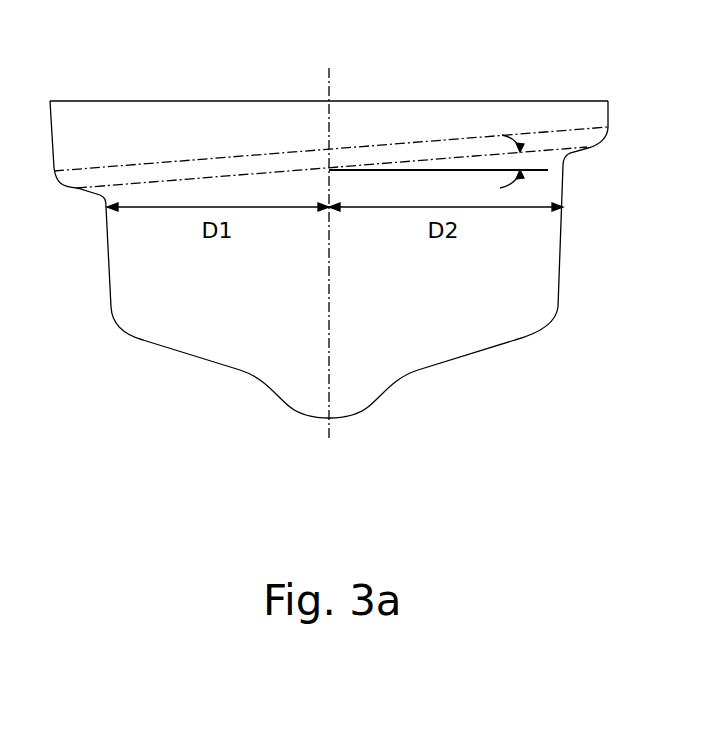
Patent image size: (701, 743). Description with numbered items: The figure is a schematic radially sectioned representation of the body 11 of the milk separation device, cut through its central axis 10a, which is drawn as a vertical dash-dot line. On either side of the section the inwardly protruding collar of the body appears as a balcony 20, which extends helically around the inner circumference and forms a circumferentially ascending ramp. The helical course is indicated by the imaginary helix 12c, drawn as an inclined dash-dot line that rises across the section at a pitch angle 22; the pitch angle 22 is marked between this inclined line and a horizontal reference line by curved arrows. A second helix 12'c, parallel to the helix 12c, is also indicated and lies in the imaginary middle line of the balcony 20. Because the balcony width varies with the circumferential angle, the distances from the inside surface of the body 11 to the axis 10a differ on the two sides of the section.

The axis 10a is at (330, 89).
The body 11 is at (528, 357).
The imaginary helix 12c is at (192, 160).
The helix 12'c is at (332, 117).
The balcony 20 is at (75, 190).
The pitch angle 22 is at (520, 168).